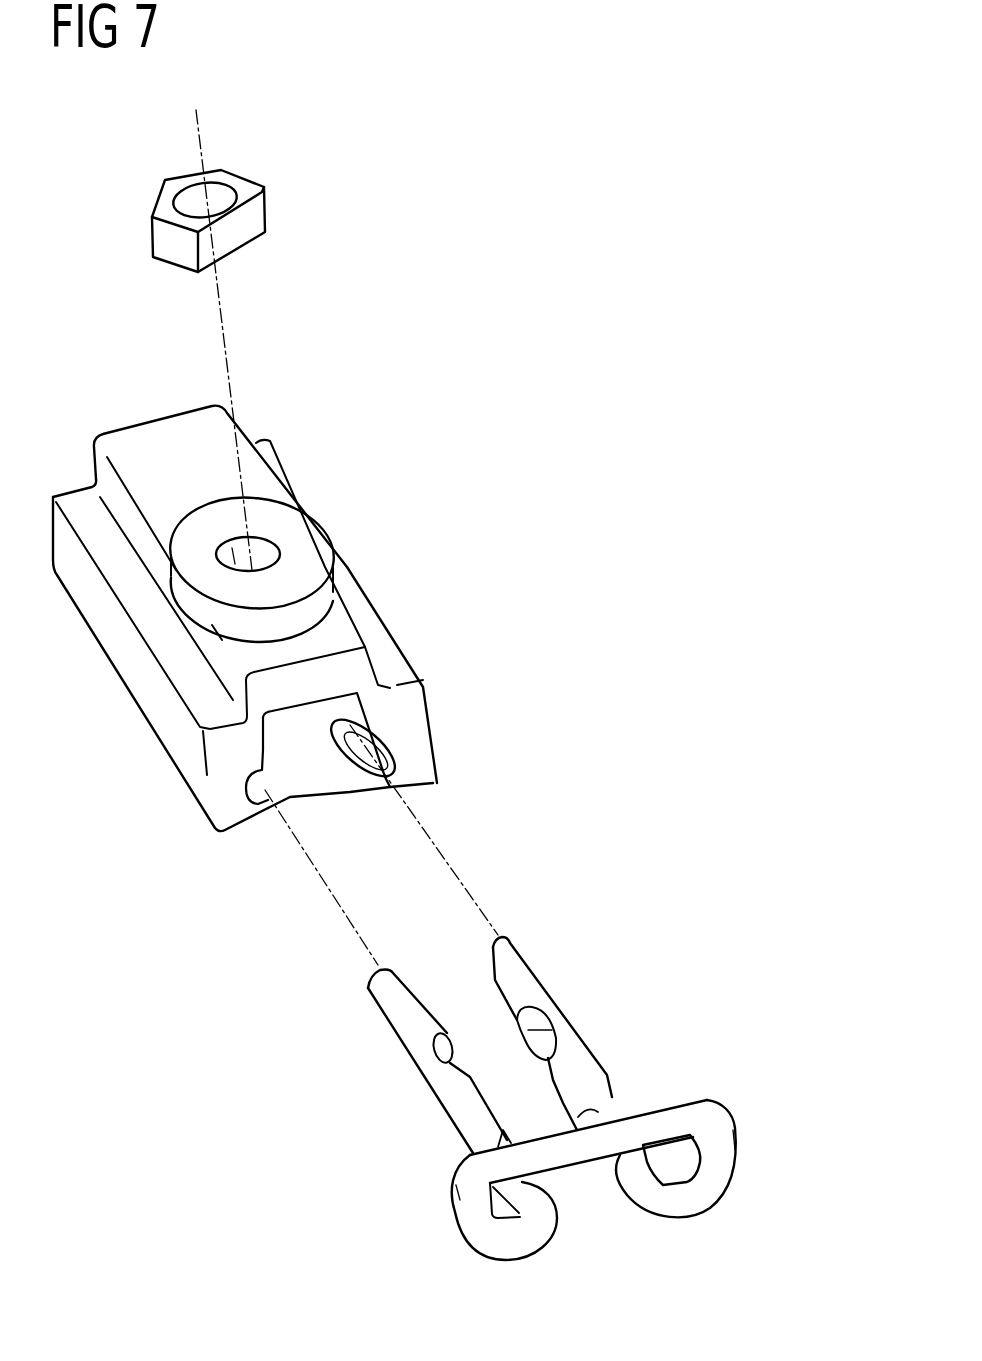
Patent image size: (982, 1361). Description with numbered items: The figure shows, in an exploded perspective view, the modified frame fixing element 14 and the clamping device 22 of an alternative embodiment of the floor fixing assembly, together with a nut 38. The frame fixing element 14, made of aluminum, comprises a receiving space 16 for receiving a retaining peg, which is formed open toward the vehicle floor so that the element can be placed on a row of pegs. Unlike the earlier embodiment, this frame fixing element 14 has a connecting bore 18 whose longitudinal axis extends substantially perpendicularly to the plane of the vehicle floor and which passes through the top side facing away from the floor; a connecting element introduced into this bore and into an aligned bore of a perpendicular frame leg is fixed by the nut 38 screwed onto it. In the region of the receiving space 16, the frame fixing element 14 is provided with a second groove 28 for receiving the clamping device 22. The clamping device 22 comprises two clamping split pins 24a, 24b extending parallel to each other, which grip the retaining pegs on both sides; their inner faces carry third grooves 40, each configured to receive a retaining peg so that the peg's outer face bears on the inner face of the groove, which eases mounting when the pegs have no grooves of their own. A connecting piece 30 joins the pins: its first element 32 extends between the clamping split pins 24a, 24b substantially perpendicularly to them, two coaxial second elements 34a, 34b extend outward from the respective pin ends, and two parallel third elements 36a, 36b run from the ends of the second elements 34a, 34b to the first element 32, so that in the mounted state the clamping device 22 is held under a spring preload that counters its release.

The frame fixing element 14 is at (277, 686).
The receiving space 16 is at (305, 800).
The connecting bore 18 is at (265, 537).
The clamping device 22 is at (482, 1023).
The clamping split pin 24a is at (400, 1023).
The clamping split pin 24b is at (520, 973).
The second groove 28 is at (396, 752).
The connecting piece 30 is at (593, 1169).
The first element 32 is at (567, 1155).
The second element 34a is at (513, 1245).
The second element 34b is at (693, 1200).
The third element 36a is at (458, 1207).
The third element 36b is at (738, 1105).
The nut 38 is at (245, 186).
The third groove 40 is at (545, 1033).